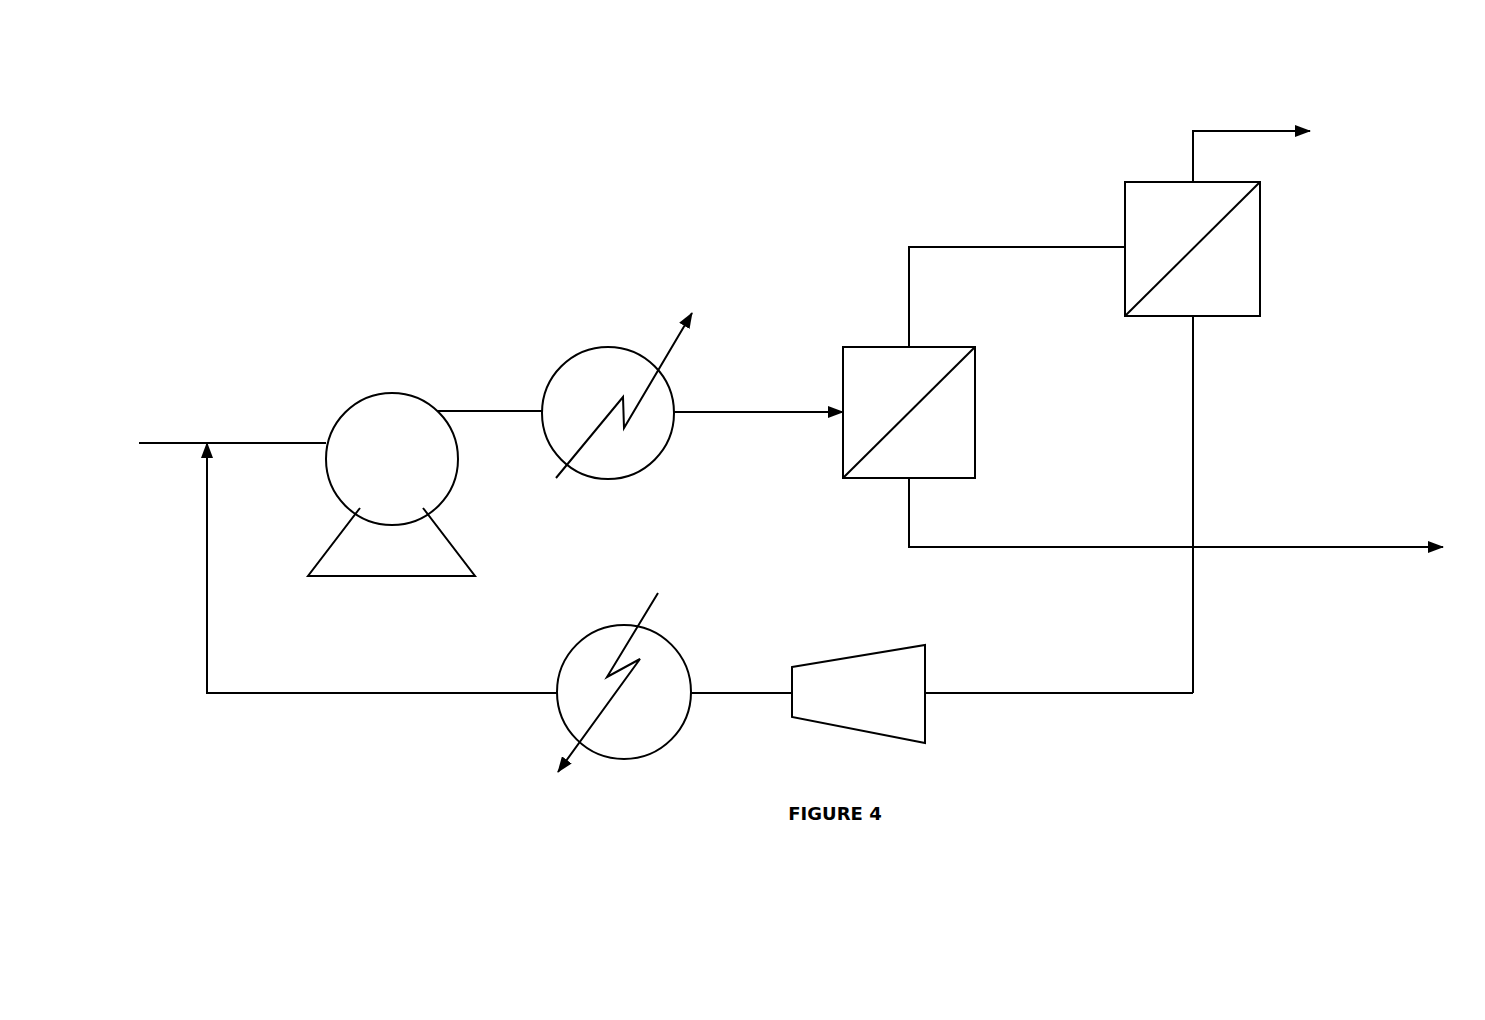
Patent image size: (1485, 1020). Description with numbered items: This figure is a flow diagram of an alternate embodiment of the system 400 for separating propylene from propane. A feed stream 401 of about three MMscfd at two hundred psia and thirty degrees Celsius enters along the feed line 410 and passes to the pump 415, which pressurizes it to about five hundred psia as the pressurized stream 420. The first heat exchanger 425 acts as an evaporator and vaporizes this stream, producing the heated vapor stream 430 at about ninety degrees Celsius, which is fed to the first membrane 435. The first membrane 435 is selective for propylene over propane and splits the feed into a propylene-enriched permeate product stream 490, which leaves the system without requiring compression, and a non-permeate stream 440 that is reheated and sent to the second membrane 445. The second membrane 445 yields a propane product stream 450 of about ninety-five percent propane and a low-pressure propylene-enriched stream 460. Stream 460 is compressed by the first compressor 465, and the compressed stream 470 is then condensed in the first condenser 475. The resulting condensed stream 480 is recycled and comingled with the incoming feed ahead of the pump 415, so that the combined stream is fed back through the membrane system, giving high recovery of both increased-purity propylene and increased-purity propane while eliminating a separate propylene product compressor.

The system 400 is at (525, 228).
The feed stream 401 is at (157, 443).
The feed line 410 is at (277, 439).
The pump 415 is at (392, 427).
The pressurized stream 420 is at (475, 408).
The first heat exchanger 425 is at (590, 347).
The vaporized feed stream 430 is at (743, 408).
The first membrane 435 is at (924, 365).
The non-permeate stream 440 is at (960, 245).
The second membrane 445 is at (1160, 220).
The propane product stream 450 is at (1260, 130).
The low pressure propylene-enriched stream 460 is at (1217, 504).
The first compressor 465 is at (858, 711).
The expanded stream 470 is at (727, 690).
The first condenser 475 is at (642, 725).
The recycle stream 480 is at (375, 692).
The propylene enriched product stream 490 is at (1358, 545).